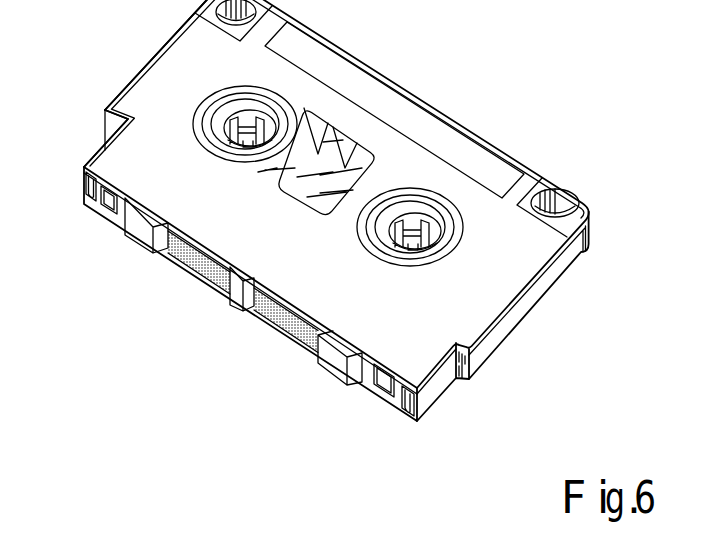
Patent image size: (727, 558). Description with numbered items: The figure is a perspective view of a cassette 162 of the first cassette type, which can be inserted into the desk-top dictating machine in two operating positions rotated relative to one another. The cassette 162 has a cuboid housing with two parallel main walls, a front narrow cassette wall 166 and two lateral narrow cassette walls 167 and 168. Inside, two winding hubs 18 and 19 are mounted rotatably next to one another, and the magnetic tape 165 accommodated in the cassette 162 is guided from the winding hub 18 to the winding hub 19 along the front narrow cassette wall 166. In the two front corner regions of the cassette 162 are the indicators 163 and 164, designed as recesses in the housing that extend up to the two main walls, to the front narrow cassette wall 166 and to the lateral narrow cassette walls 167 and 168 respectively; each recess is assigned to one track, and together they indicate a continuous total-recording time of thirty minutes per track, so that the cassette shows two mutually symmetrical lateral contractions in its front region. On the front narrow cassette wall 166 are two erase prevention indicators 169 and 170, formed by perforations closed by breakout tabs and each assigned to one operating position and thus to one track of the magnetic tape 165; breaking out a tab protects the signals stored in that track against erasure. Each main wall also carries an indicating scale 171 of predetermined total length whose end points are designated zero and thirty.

The winding hub 18 is at (232, 108).
The winding hub 19 is at (420, 210).
The cassette 162 is at (537, 149).
The indicator 163 is at (93, 145).
The indicator 164 is at (448, 402).
The magnetic tape 165 is at (278, 317).
The front narrow cassette wall 166 is at (340, 365).
The lateral narrow cassette wall 167 is at (518, 307).
The lateral narrow cassette wall 168 is at (137, 80).
The erase prevention indicator 169 is at (403, 415).
The erase prevention indicator 170 is at (84, 189).
The indicating scale 171 is at (489, 159).